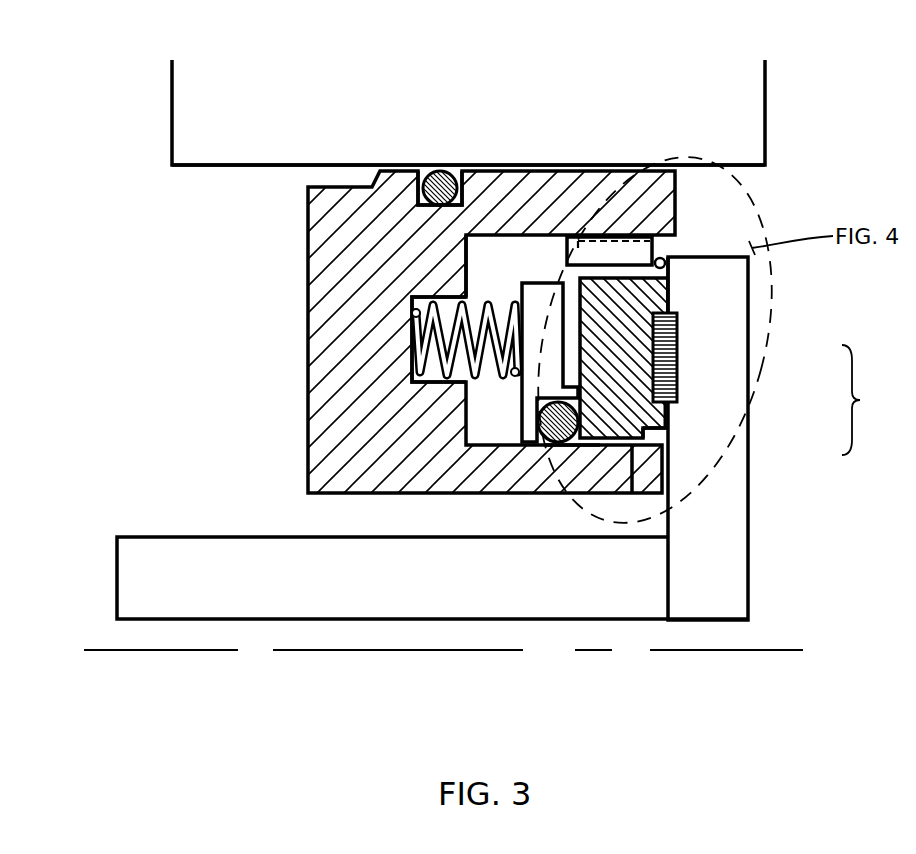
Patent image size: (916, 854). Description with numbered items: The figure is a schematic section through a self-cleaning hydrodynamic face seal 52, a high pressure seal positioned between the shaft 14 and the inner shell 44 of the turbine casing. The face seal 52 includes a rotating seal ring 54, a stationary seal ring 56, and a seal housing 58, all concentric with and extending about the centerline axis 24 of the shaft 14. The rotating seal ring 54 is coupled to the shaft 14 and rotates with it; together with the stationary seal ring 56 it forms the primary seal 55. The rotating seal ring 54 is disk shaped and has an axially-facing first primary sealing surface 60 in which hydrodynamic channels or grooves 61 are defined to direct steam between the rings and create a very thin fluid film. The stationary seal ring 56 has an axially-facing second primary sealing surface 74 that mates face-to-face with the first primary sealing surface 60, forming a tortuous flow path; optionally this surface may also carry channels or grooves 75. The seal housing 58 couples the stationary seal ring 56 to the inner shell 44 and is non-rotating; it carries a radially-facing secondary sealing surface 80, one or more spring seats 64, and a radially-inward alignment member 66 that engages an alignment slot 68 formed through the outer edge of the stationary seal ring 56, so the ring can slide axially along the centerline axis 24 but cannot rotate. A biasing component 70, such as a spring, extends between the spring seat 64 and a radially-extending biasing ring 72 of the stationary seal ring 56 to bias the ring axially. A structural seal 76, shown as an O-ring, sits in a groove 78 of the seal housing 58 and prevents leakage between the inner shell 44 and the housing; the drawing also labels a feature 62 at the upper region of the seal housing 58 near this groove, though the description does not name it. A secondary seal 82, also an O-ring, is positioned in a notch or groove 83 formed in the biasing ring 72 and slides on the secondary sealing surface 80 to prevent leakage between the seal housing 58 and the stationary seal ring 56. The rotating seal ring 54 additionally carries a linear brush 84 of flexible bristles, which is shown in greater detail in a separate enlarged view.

The shaft 14 is at (135, 565).
The centerline axis 24 is at (106, 650).
The inner shell 44 is at (188, 165).
The face seal 52 is at (232, 82).
The rotating seal ring 54 is at (725, 370).
The primary seal 55 is at (864, 400).
The stationary seal ring 56 is at (678, 433).
The seal housing 58 is at (308, 372).
The first primary sealing surface 60 is at (682, 248).
The channels or grooves 61 is at (677, 340).
The seal groove 62 is at (410, 166).
The spring seat 64 is at (412, 296).
The alignment member 66 is at (660, 257).
The alignment slot 68 is at (607, 262).
The biasing component 70 is at (415, 345).
The biasing ring 72 is at (541, 283).
The second primary sealing surface 74 is at (668, 307).
The channels or grooves 75 is at (662, 438).
The structural seal 76 is at (438, 170).
The groove 78 is at (467, 242).
The secondary sealing surface 80 is at (547, 438).
The secondary seal 82 is at (563, 446).
The notch or groove 83 is at (596, 450).
The brush 84 is at (682, 422).